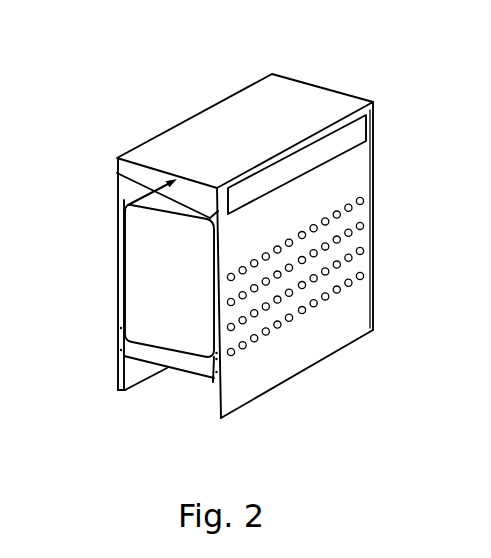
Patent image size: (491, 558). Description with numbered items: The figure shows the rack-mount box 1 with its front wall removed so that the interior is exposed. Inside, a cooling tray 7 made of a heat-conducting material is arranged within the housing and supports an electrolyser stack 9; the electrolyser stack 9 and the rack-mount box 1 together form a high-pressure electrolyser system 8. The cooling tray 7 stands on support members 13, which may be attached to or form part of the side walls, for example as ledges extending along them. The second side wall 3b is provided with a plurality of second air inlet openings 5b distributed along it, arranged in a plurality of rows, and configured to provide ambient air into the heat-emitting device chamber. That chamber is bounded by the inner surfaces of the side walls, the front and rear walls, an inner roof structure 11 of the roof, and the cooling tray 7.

The rack-mount box 1 is at (169, 108).
The second side wall 3b is at (367, 309).
The second air inlet openings 5b is at (367, 238).
The cooling tray 7 is at (122, 344).
The high-pressure electrolyser system 8 is at (408, 30).
The electrolyser stack 9 is at (152, 250).
The inner roof structure 11 is at (133, 203).
The support members 13 is at (127, 392).